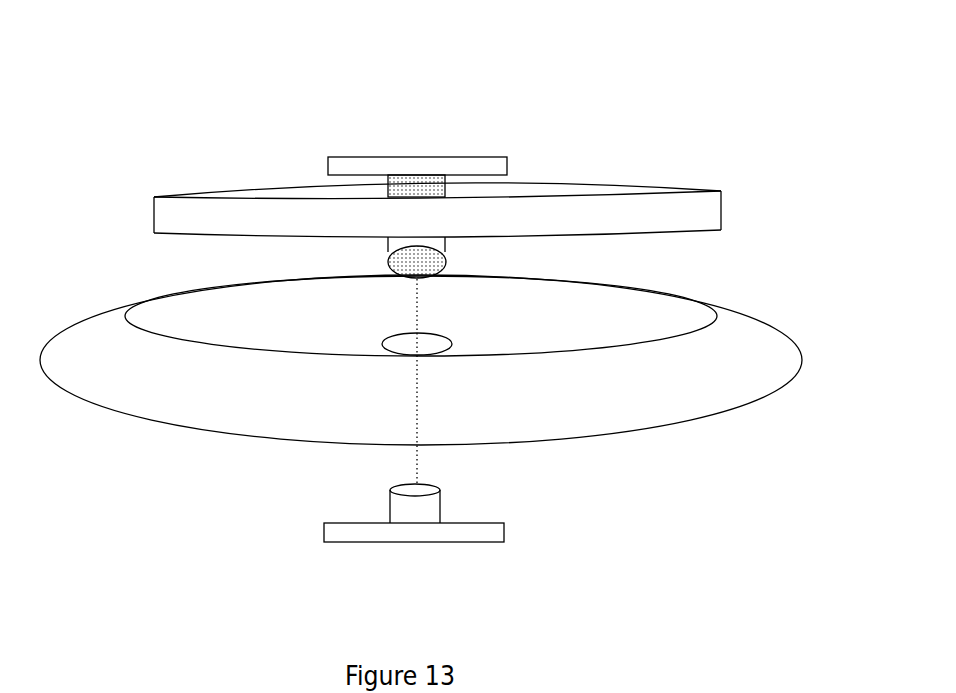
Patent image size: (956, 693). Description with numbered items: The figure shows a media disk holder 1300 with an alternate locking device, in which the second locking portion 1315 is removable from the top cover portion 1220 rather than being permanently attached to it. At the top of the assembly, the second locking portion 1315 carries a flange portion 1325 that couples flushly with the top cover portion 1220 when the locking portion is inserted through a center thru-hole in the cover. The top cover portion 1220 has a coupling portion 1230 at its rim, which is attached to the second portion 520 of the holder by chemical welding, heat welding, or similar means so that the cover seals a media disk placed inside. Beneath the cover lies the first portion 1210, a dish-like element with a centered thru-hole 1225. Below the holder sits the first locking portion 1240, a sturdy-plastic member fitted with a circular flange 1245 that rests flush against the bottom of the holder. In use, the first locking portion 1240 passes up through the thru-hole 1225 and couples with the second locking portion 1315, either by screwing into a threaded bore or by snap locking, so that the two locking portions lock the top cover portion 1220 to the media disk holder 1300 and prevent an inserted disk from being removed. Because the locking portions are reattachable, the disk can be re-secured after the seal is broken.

The media disk holder 1300 is at (182, 108).
The second locking portion 1315 is at (388, 143).
The flange portion 1325 is at (452, 155).
The top cover portion 1220 is at (512, 178).
The coupling portion 1230 is at (724, 210).
The first portion 1210 is at (228, 335).
The second portion 520 is at (187, 375).
The thru-hole 1225 is at (433, 348).
The first locking portion 1240 is at (380, 509).
The flange 1245 is at (504, 542).